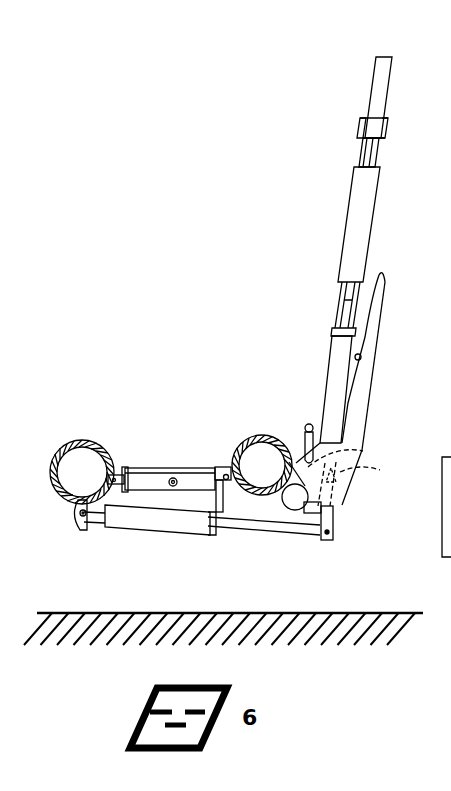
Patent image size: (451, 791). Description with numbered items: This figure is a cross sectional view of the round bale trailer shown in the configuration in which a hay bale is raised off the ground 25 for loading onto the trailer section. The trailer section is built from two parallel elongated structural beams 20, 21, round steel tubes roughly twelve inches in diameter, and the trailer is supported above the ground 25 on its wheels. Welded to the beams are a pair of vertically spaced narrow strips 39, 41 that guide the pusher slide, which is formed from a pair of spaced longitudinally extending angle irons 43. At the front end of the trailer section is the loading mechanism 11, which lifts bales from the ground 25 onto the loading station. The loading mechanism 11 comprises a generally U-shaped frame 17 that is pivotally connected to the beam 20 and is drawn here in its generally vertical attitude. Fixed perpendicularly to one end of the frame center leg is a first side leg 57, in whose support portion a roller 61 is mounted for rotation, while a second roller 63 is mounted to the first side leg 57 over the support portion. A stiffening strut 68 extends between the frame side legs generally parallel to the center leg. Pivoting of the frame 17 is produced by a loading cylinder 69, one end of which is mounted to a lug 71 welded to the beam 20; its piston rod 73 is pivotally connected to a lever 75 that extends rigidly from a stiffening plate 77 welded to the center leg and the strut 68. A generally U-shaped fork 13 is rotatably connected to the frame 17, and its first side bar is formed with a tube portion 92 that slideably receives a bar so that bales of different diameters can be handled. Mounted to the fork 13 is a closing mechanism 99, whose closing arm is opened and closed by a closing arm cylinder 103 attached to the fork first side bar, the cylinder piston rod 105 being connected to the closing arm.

The loading mechanism 11 is at (332, 545).
The fork 13 is at (360, 156).
The frame 17 is at (371, 387).
The structural beam 20 is at (262, 436).
The structural beam 21 is at (78, 443).
The ground 25 is at (94, 677).
The narrow strip 39 is at (125, 467).
The narrow strip 41 is at (219, 490).
The angle irons 43 is at (222, 512).
The first side leg 57 is at (374, 343).
The roller 61 is at (355, 356).
The second roller 63 is at (310, 424).
The stiffening strut 68 is at (358, 455).
The loading cylinder 69 is at (132, 522).
The lug 71 is at (77, 527).
The piston rod 73 is at (250, 530).
The lever 75 is at (335, 520).
The stiffening plate 77 is at (376, 470).
The tube portion 92 is at (328, 383).
The closing mechanism 99 is at (374, 75).
The closing arm cylinder 103 is at (347, 222).
The cylinder piston rod 105 is at (360, 153).